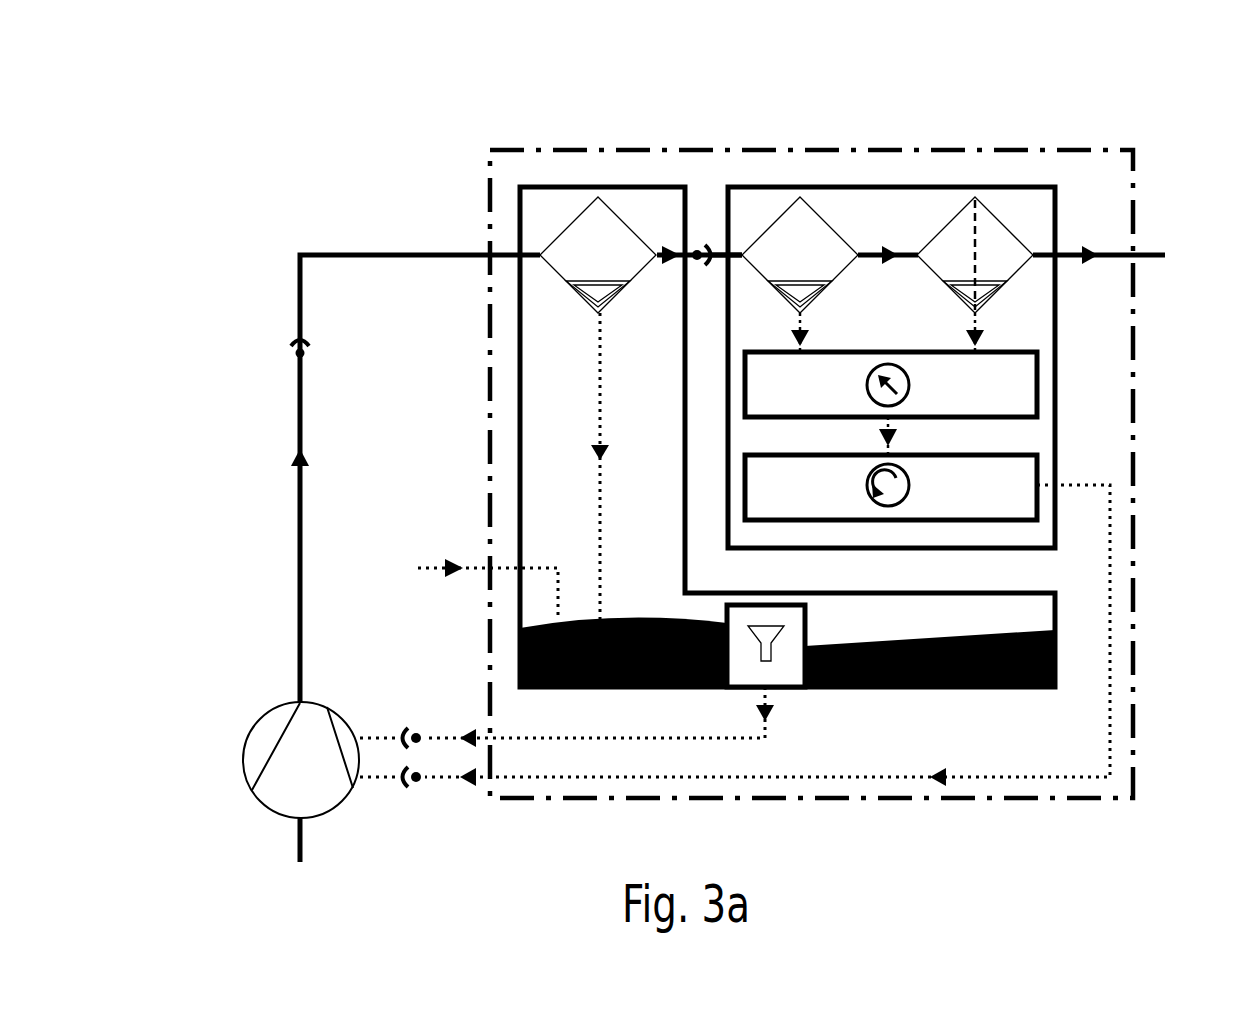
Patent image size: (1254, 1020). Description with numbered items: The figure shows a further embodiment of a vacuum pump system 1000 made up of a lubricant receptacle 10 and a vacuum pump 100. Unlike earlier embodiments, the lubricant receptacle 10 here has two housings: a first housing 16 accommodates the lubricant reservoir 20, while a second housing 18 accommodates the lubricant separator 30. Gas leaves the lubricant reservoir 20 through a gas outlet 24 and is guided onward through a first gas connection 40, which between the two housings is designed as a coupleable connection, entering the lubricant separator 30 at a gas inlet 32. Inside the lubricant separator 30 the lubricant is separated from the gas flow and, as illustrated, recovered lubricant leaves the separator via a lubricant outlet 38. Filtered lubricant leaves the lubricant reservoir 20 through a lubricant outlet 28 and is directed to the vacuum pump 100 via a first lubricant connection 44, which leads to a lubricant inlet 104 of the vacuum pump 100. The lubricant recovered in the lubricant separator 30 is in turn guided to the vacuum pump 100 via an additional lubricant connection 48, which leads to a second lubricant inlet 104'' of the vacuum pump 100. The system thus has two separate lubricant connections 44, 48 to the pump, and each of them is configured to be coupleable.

The vacuum pump system 1000 is at (170, 165).
The lubricant receptacle 10 is at (1098, 88).
The first housing 16 is at (541, 186).
The lubricant reservoir 20 is at (622, 187).
The gas outlet 24 is at (695, 248).
The first gas connection 40 is at (706, 243).
The gas inlet 32 is at (719, 250).
The lubricant separator 30 is at (867, 200).
The second housing 18 is at (961, 186).
The lubricant outlet 38 is at (1060, 484).
The lubricant outlet 28 is at (770, 690).
The lubricant inlet 104 is at (401, 677).
The second lubricant inlet 104'' is at (393, 836).
The first lubricant connection 44 is at (421, 745).
The additional lubricant connection 48 is at (421, 785).
The vacuum pump 100 is at (295, 779).